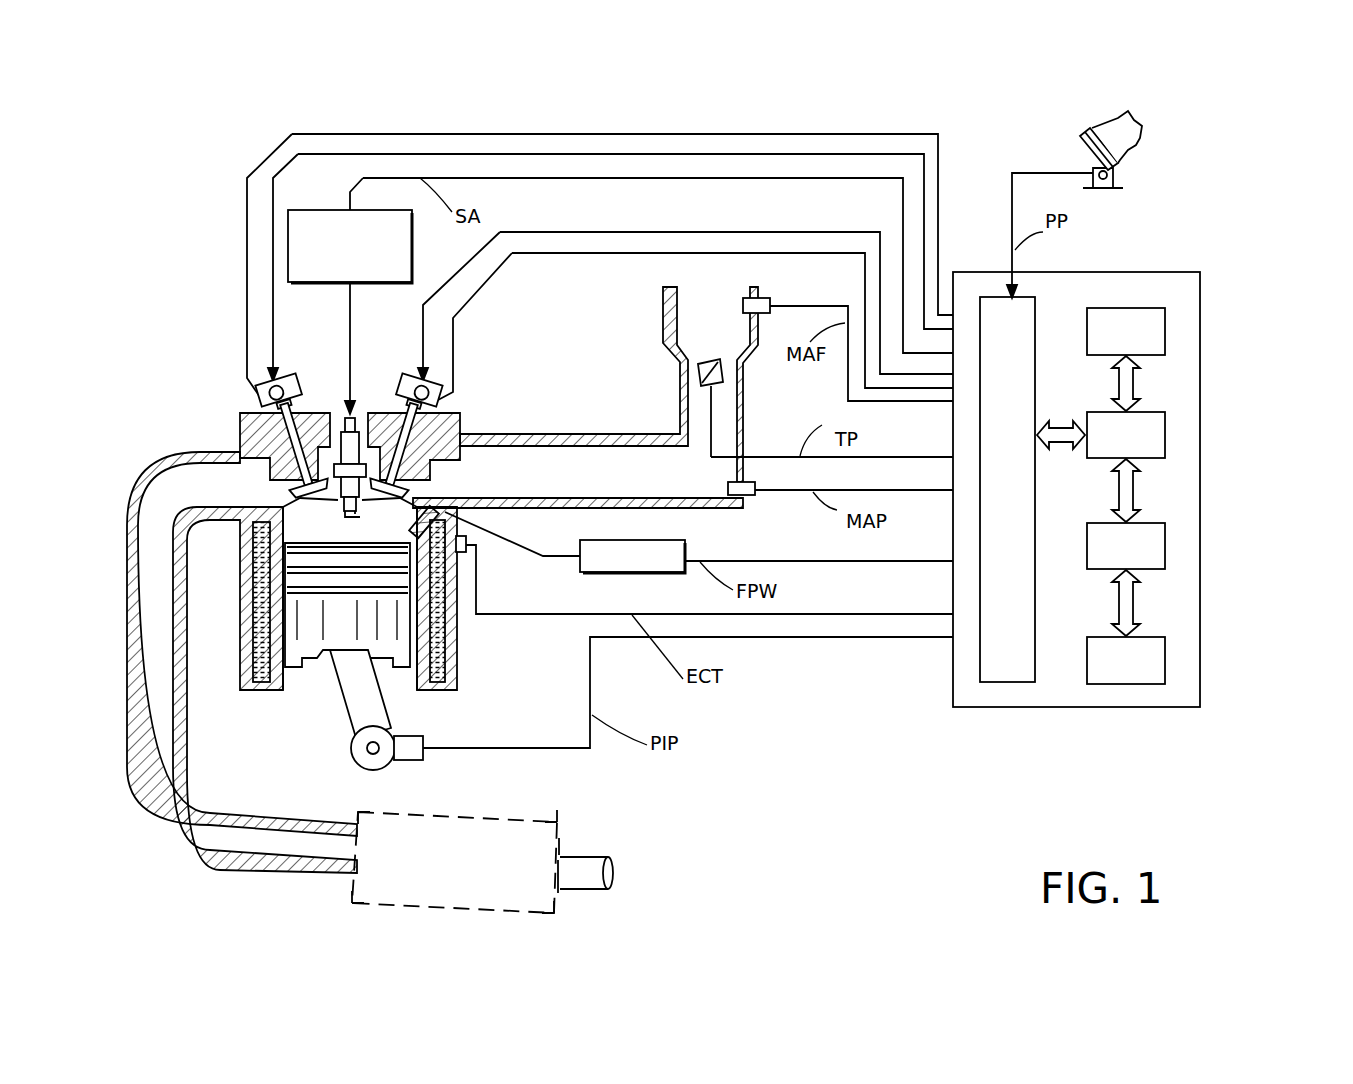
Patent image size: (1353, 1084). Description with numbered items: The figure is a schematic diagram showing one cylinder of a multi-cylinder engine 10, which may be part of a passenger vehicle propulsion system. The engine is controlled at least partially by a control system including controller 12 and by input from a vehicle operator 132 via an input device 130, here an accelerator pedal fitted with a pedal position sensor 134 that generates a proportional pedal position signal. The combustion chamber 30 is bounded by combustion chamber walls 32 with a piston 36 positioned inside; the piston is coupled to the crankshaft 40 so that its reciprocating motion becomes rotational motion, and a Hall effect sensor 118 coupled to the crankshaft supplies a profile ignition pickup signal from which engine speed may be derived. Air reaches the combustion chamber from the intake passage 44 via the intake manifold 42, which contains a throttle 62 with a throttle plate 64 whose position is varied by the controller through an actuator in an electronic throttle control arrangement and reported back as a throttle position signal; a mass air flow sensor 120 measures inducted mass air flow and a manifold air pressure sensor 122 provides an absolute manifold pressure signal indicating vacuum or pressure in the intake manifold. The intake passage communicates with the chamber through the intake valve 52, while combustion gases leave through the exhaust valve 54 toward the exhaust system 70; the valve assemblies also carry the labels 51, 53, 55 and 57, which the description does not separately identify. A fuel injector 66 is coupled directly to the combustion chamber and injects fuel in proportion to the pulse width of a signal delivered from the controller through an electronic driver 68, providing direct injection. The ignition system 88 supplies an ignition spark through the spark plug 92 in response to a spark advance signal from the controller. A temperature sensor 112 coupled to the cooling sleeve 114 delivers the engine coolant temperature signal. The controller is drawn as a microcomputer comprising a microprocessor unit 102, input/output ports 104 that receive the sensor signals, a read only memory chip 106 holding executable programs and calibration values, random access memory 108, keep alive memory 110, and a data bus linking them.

The engine 10 is at (166, 356).
The controller 12 is at (1192, 276).
The combustion chamber 30 is at (347, 523).
The combustion chamber walls 32 is at (288, 693).
The piston 36 is at (330, 677).
The crankshaft 40 is at (363, 770).
The intake manifold 42 is at (609, 384).
The intake passage 44 is at (578, 487).
The intake valve 51 is at (410, 383).
The intake valve 52 is at (400, 486).
The exhaust valve 53 is at (290, 382).
The exhaust valve 54 is at (240, 470).
The intake valve actuator 55 is at (440, 400).
The exhaust valve actuator 57 is at (260, 400).
The throttle 62 is at (722, 368).
The throttle plate 64 is at (690, 368).
The fuel injector 66 is at (472, 524).
The electronic driver 68 is at (600, 572).
The exhaust system 70 is at (543, 825).
The ignition system 88 is at (300, 210).
The spark plug 92 is at (358, 420).
The microprocessor unit 102 is at (1170, 435).
The input/output ports 104 is at (1038, 300).
The read only memory chip 106 is at (1170, 325).
The random access memory 108 is at (1170, 548).
The keep alive memory 110 is at (1170, 660).
The temperature sensor 112 is at (477, 553).
The cooling sleeve 114 is at (457, 643).
The Hall effect sensor 118 is at (410, 762).
The mass air flow sensor 120 is at (770, 298).
The manifold air pressure sensor 122 is at (750, 497).
The input device 130 is at (1083, 150).
The vehicle operator 132 is at (1140, 132).
The pedal position sensor 134 is at (1123, 182).